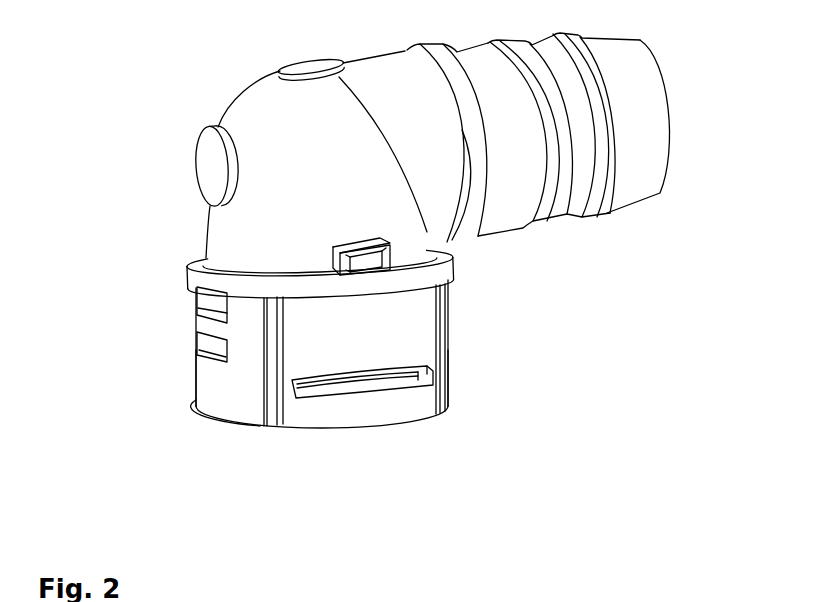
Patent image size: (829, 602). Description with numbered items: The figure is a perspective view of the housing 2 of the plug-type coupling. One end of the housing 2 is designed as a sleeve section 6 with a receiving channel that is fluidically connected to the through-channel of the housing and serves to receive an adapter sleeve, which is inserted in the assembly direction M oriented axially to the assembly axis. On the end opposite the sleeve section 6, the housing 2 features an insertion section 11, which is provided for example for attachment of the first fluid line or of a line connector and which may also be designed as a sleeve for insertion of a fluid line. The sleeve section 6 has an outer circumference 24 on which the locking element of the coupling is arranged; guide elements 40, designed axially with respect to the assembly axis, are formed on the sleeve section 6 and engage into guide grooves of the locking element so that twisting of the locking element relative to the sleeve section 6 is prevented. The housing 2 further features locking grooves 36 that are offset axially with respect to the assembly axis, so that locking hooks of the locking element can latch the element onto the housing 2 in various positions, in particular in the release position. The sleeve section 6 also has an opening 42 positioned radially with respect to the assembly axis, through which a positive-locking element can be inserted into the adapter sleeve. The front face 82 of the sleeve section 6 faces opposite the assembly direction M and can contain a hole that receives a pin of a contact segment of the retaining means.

The housing 2 is at (201, 82).
The sleeve section 6 is at (395, 407).
The insertion section 11 is at (637, 125).
The outer circumference 24 is at (403, 312).
The locking groove 36 is at (213, 300).
The guide element 40 is at (442, 345).
The opening 42 is at (320, 383).
The front face 82 is at (237, 425).
The assembly direction M is at (356, 454).